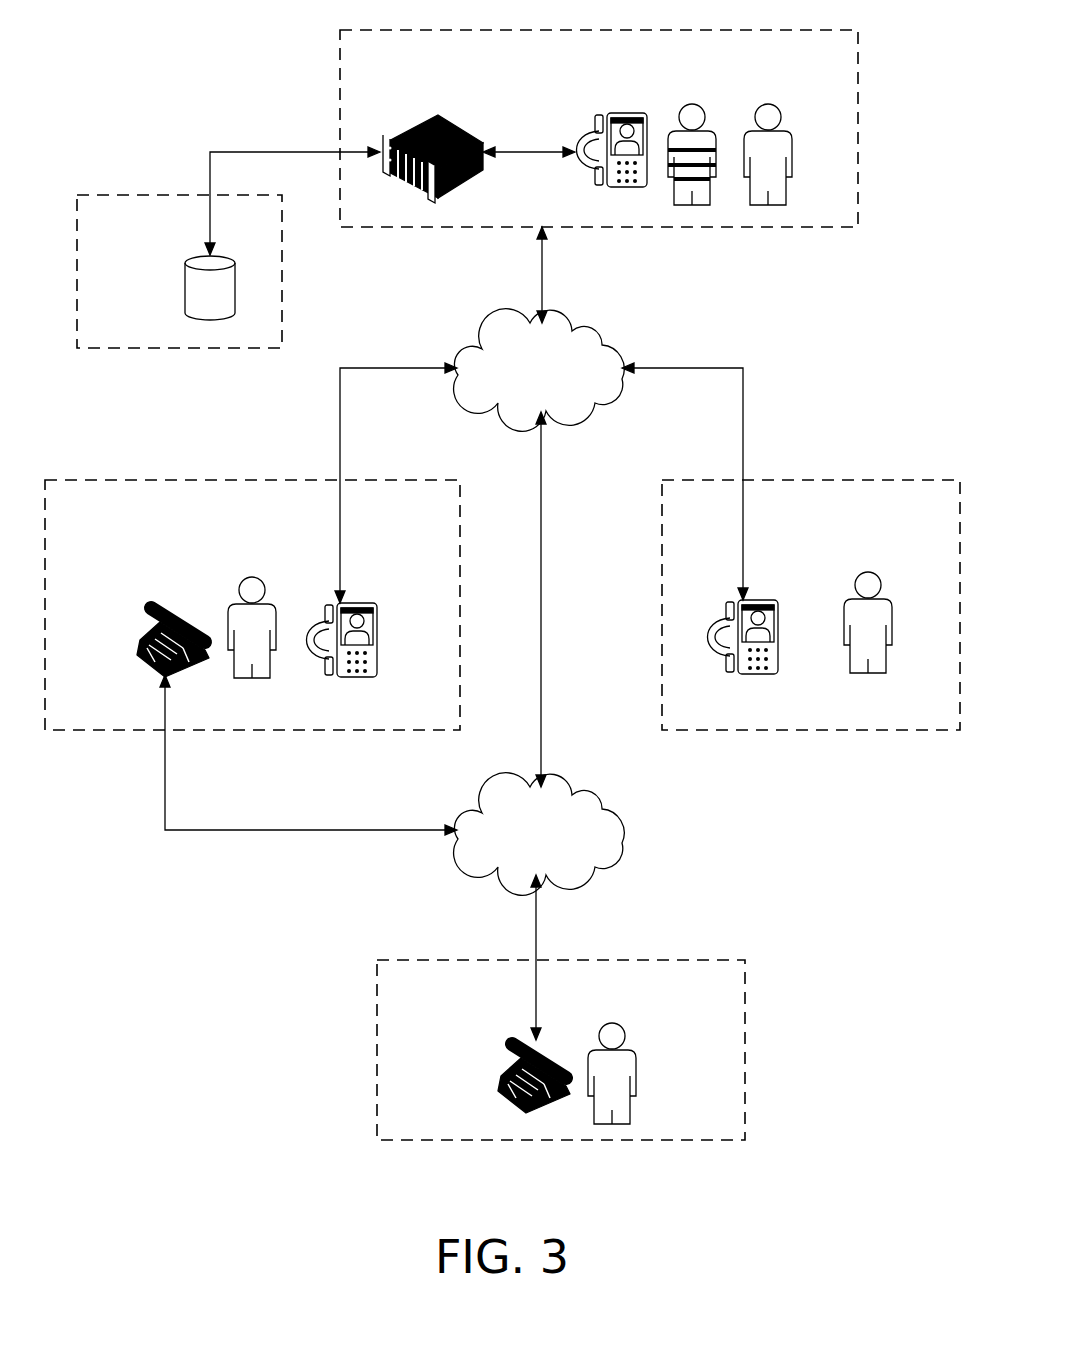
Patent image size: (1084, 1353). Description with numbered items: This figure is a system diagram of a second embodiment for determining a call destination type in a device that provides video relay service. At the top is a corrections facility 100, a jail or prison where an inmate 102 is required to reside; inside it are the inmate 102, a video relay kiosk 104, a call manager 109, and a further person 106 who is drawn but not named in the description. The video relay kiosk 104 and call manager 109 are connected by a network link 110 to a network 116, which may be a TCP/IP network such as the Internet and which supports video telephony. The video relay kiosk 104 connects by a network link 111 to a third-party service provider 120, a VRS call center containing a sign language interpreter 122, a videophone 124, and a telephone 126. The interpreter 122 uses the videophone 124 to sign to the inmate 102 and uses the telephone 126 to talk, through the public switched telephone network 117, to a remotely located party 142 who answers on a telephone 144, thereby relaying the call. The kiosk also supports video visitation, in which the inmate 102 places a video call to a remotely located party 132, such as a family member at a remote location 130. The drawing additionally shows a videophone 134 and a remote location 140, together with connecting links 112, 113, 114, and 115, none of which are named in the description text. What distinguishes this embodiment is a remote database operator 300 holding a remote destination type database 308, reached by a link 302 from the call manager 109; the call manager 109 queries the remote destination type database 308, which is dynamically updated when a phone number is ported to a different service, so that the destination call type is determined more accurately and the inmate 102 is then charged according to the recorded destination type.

The corrections facility 100 is at (858, 130).
The inmate 102 is at (717, 142).
The video relay kiosk 104 is at (627, 113).
The facility staff member 106 is at (795, 145).
The call manager 109 is at (455, 118).
The network link 110 is at (545, 277).
The network link 111 is at (385, 368).
The communication link 112 is at (680, 368).
The communication link 113 is at (192, 830).
The communication link 114 is at (588, 599).
The communication link 115 is at (536, 928).
The network 116 is at (527, 381).
The public switched telephone network 117 is at (518, 846).
The third-party service provider 120 is at (148, 480).
The sign language interpreter 122 is at (262, 593).
The videophone 124 is at (377, 640).
The telephone 126 is at (142, 617).
The remote location 130 is at (930, 480).
The remotely located party 132 is at (883, 585).
The remote communication device 134 is at (782, 635).
The remote location 140 is at (745, 1073).
The remotely located party 142 is at (635, 1073).
The telephone 144 is at (505, 1050).
The remote database operator 300 is at (125, 194).
The data link 302 is at (273, 152).
The remote destination type database 308 is at (185, 293).